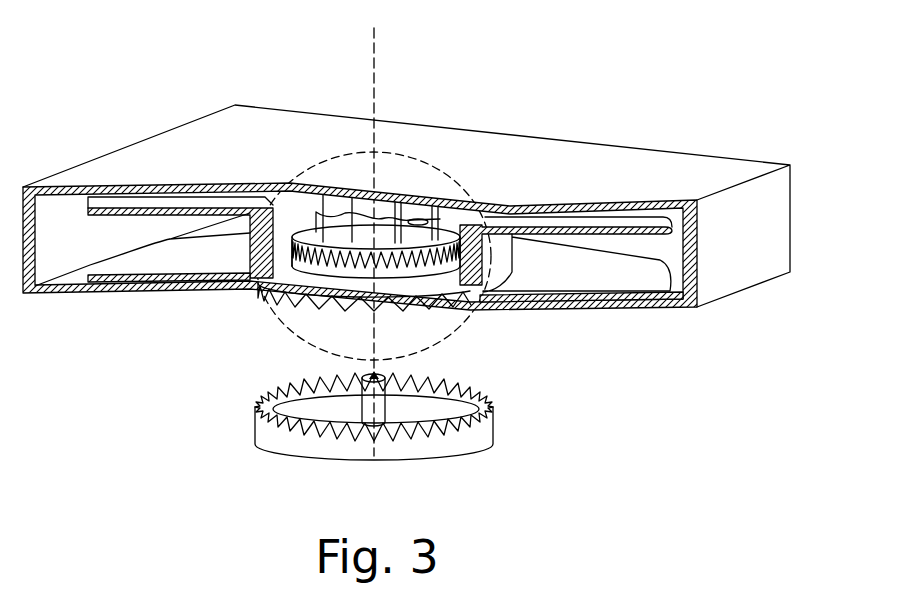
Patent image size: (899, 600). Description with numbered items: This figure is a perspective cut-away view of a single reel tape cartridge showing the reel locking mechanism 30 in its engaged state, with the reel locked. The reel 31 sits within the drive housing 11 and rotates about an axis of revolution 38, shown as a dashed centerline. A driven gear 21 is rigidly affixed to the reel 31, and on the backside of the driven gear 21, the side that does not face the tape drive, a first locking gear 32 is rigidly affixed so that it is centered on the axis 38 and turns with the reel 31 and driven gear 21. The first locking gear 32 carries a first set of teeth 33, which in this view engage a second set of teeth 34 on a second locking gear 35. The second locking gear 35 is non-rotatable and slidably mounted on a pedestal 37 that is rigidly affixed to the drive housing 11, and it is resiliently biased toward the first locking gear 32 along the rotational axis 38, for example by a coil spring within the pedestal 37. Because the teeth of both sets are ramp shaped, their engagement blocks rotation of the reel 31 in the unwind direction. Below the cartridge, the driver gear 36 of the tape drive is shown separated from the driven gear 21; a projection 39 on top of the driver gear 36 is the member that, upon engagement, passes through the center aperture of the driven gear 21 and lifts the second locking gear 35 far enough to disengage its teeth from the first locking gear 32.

The drive housing 11 is at (745, 272).
The driven gear 21 is at (318, 262).
The reel locking mechanism 30 is at (348, 152).
The reel 31 is at (187, 262).
The first locking gear 32 is at (297, 288).
The first set of teeth 33 is at (416, 282).
The second set of teeth 34 is at (322, 232).
The second locking gear 35 is at (398, 257).
The driver gear 36 is at (452, 447).
The pedestal 37 is at (430, 216).
The axis of revolution 38 is at (376, 74).
The projection 39 is at (365, 428).